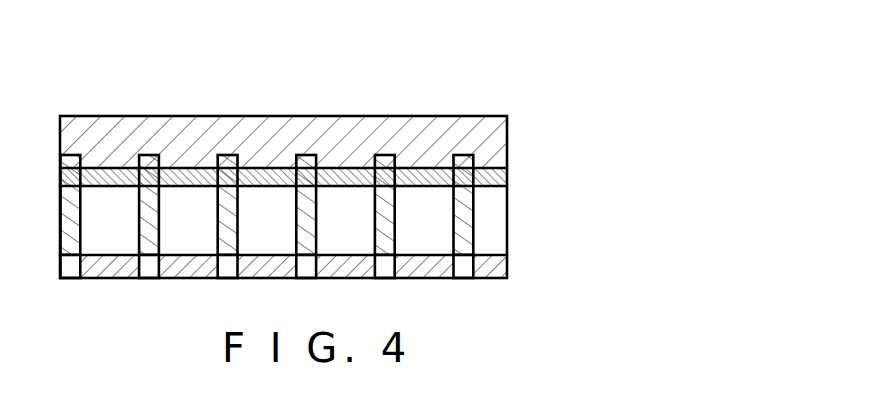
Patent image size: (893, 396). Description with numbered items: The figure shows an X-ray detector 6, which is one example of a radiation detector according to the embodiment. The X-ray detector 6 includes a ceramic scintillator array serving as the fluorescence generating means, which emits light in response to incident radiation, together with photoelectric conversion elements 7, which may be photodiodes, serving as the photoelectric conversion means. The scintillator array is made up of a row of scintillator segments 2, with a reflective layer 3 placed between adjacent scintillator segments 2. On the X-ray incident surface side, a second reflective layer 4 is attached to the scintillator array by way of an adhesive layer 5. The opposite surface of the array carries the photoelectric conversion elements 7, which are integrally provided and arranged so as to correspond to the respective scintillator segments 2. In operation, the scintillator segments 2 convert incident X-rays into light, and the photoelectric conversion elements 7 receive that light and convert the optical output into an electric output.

The X-ray detector 6 is at (309, 153).
The reflective layer 4 is at (499, 128).
The adhesive layer 5 is at (500, 175).
The scintillator segment 2 is at (499, 210).
The reflective layer between scintillator segments 3 is at (462, 243).
The photoelectric conversion element 7 is at (502, 264).